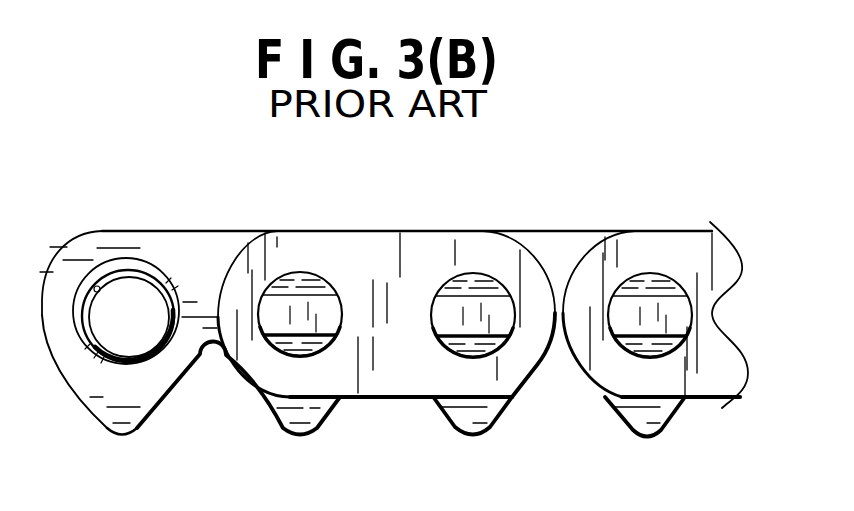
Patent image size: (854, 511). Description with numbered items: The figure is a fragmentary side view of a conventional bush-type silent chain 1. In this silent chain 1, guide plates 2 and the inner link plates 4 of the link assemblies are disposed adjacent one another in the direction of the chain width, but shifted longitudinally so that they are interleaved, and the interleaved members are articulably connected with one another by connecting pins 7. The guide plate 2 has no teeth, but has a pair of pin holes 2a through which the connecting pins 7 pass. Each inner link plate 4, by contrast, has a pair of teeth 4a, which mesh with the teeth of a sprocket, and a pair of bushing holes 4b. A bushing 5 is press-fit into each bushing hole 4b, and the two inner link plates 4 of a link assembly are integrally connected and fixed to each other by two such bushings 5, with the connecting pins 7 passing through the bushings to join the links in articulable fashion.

The silent chain 1 is at (535, 229).
The guide plate 2 is at (385, 255).
The pin hole 2a is at (449, 343).
The inner link plate 4 is at (192, 250).
The tooth 4a is at (131, 417).
The bushing hole 4b is at (99, 285).
The bushing 5 is at (110, 363).
The connecting pin 7 is at (299, 307).